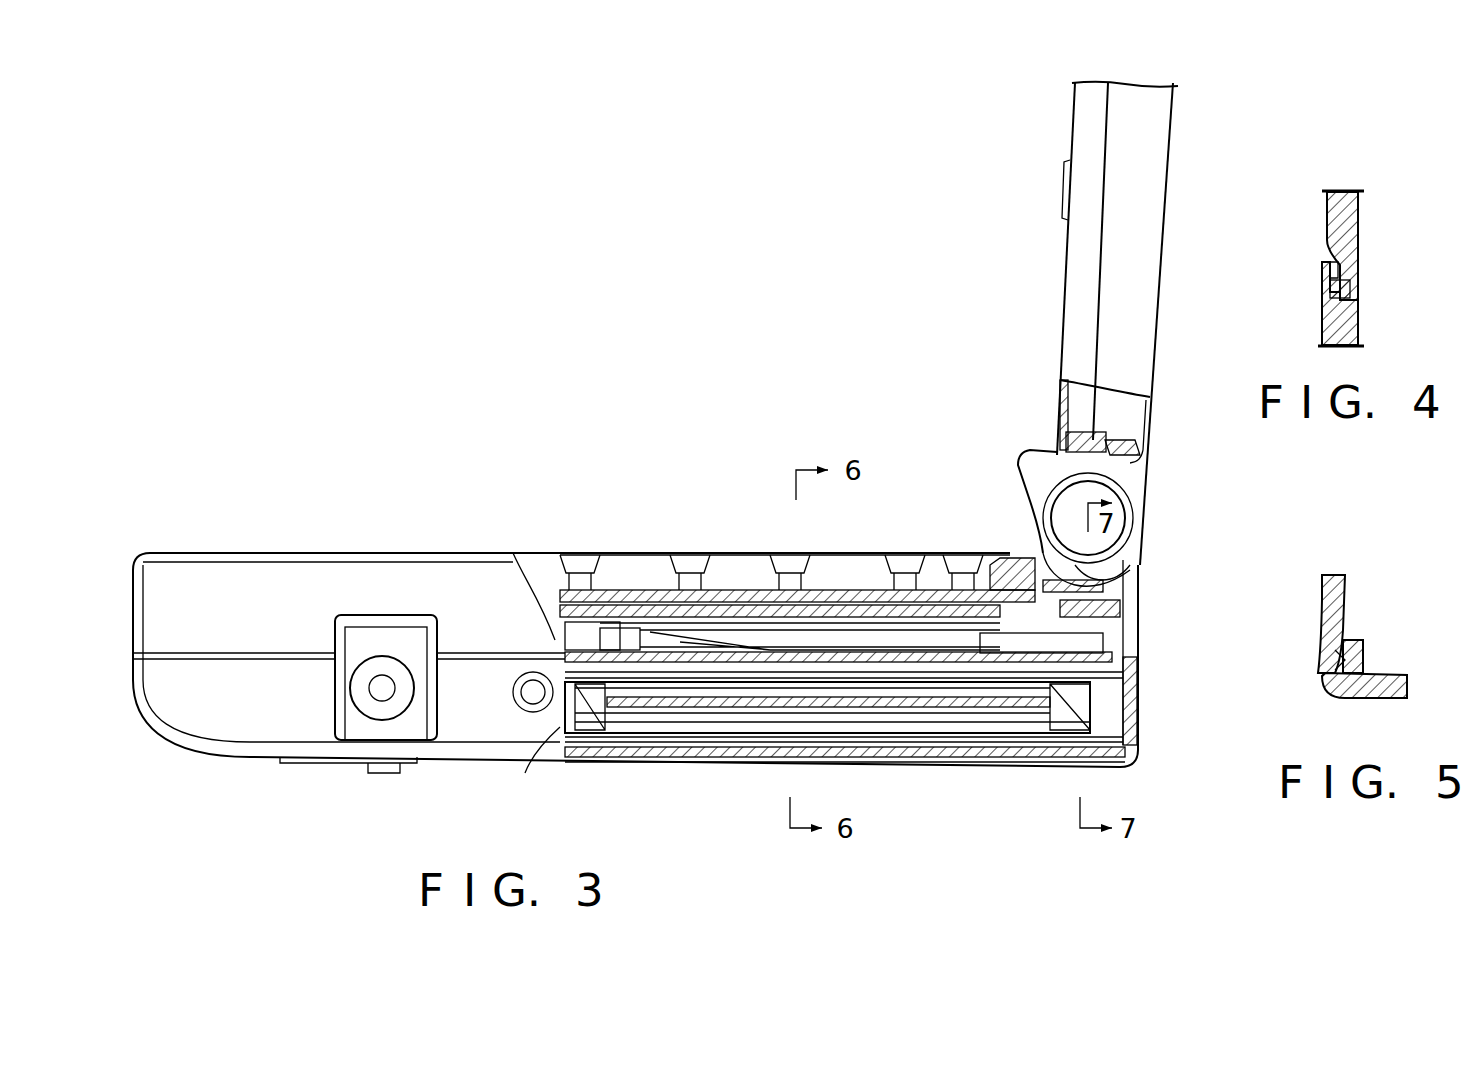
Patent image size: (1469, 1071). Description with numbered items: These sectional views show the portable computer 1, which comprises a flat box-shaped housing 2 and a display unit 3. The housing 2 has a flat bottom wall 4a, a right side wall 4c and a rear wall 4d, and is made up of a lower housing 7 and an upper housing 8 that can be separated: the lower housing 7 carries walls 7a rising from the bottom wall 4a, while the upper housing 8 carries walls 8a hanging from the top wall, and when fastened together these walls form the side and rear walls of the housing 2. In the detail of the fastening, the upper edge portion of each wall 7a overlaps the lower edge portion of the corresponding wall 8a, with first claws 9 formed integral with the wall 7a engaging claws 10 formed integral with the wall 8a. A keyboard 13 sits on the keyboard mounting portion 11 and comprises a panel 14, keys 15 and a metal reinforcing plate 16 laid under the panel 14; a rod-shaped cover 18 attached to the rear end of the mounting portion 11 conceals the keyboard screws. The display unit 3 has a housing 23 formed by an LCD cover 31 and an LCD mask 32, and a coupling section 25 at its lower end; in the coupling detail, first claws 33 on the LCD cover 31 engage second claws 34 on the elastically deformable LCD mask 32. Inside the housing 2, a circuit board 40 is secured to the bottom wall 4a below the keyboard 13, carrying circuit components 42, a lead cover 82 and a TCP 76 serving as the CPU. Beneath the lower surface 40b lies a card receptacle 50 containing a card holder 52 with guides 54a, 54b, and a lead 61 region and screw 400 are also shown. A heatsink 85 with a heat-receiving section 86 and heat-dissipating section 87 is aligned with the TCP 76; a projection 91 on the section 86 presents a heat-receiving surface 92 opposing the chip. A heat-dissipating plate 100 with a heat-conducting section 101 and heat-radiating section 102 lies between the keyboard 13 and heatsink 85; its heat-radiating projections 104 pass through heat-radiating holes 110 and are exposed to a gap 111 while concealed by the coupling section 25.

In FIG. 3, the portable computer 1 is at (1048, 255).
In FIG. 3, the housing 2 is at (175, 553).
In FIG. 3, the display unit 3 is at (1072, 118).
In FIG. 3, the bottom wall 4a is at (1012, 755).
In FIG. 3, the side wall 4c is at (436, 580).
In FIG. 3, the rear wall 4d is at (1135, 685).
In FIG. 3, the lower housing 7 is at (1130, 748).
In FIG. 3, the wall of lower housing 7a is at (463, 733).
In FIG. 4, the wall of lower housing 7a is at (1355, 324).
In FIG. 3, the upper housing 8 is at (1135, 600).
In FIG. 3, the wall of upper housing 8a is at (268, 580).
In FIG. 4, the wall of upper housing 8a is at (1358, 209).
In FIG. 4, the first claw 9 is at (1322, 272).
In FIG. 4, the claw 10 is at (1345, 292).
In FIG. 3, the keyboard mounting portion 11 is at (900, 555).
In FIG. 3, the keyboard 13 is at (632, 553).
In FIG. 3, the panel 14 is at (578, 573).
In FIG. 3, the keys 15 is at (700, 555).
In FIG. 3, the reinforcing plate 16 is at (565, 636).
In FIG. 3, the cover 18 is at (1020, 560).
In FIG. 3, the housing of display unit 23 is at (1160, 143).
In FIG. 3, the coupling section 25 is at (1140, 500).
In FIG. 3, the LCD cover 31 is at (1150, 410).
In FIG. 5, the LCD cover 31 is at (1325, 602).
In FIG. 3, the LCD mask 32 is at (1062, 380).
In FIG. 5, the LCD mask 32 is at (1407, 687).
In FIG. 5, the first claws 33 is at (1340, 657).
In FIG. 5, the second claws 34 is at (1355, 640).
In FIG. 3, the circuit board 40 is at (955, 740).
In FIG. 3, the lower surface 40b is at (1092, 692).
In FIG. 3, the circuit components 42 is at (1110, 645).
In FIG. 3, the card receptacle 50 is at (620, 720).
In FIG. 3, the card holder 52 is at (740, 700).
In FIG. 3, the guide 54a is at (522, 740).
In FIG. 3, the guide 54b is at (1115, 762).
In FIG. 3, the battery case 61 is at (890, 715).
In FIG. 3, the TCP 76 is at (808, 580).
In FIG. 3, the lead cover 82 is at (660, 740).
In FIG. 3, the heatsink 85 is at (858, 580).
In FIG. 3, the heat-receiving section 86 is at (720, 580).
In FIG. 3, the heat-dissipating section 87 is at (565, 625).
In FIG. 3, the projection 91 is at (770, 600).
In FIG. 3, the heat-receiving surface 92 is at (810, 660).
In FIG. 3, the heat-dissipating plate 100 is at (975, 580).
In FIG. 3, the heat-conducting section 101 is at (745, 590).
In FIG. 3, the heat-radiating section 102 is at (1120, 615).
In FIG. 3, the heat-radiating projections 104 is at (1068, 535).
In FIG. 3, the heat-radiating holes 110 is at (1120, 572).
In FIG. 3, the gap 111 is at (1110, 557).
In FIG. 3, the screw 400 is at (533, 672).